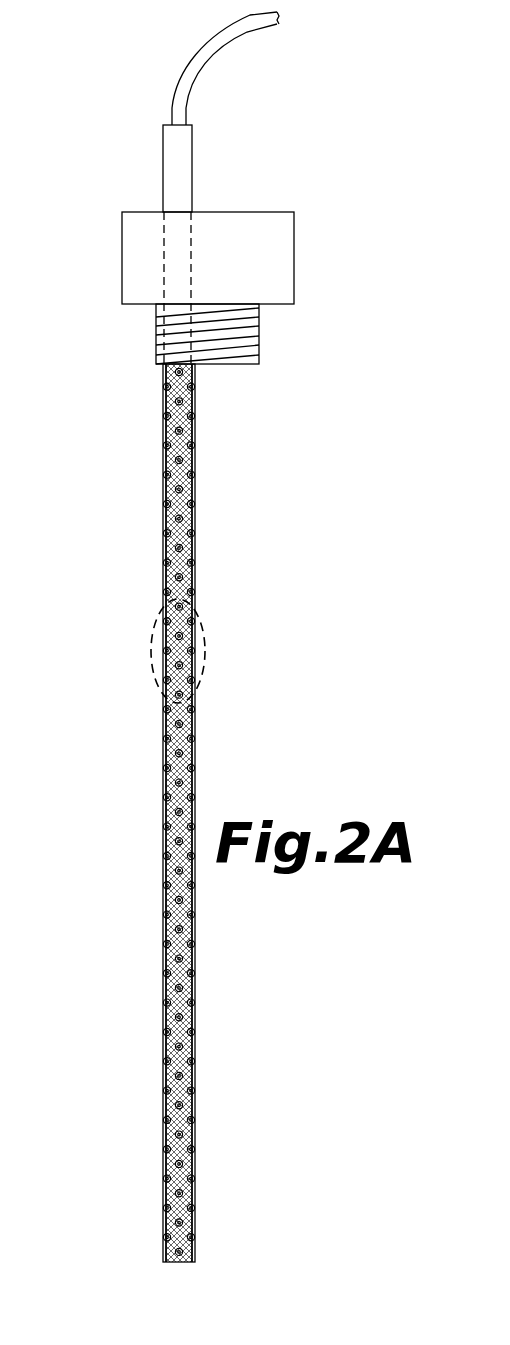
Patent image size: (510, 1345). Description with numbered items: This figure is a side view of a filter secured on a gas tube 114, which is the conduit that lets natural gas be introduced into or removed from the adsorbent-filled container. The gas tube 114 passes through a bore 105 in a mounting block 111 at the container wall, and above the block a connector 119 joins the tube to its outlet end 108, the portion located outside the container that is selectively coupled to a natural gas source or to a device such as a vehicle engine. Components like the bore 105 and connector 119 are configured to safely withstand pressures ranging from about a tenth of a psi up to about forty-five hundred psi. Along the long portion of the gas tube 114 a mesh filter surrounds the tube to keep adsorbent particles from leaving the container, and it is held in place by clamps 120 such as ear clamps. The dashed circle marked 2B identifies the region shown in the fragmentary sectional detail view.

The bore 105 is at (164, 255).
The outlet end 108 is at (189, 60).
The mounting block 111 is at (294, 253).
The gas tube 114 is at (162, 950).
The connector 119 is at (192, 160).
The clamps 120 is at (198, 366).
The detail view reference 2B is at (158, 625).